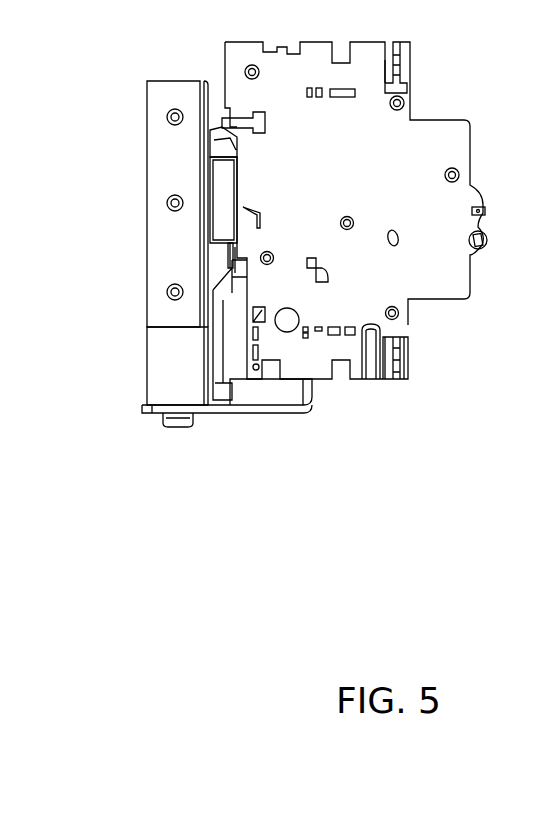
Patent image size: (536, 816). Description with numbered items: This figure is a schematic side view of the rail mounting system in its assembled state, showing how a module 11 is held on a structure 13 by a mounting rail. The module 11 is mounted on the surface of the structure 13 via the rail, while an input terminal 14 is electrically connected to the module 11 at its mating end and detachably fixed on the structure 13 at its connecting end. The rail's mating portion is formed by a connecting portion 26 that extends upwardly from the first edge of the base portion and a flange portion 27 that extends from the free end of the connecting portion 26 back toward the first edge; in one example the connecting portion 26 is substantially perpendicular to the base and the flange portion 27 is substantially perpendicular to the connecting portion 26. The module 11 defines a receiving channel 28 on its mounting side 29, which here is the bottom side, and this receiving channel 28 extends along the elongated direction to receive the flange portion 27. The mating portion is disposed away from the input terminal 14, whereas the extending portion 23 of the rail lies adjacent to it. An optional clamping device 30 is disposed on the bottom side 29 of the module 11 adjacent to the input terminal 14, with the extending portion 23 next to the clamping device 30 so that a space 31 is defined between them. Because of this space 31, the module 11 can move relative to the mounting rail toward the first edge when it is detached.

The module 11 is at (403, 153).
The structure 13 is at (160, 157).
The input terminal 14 is at (310, 396).
The extending portion 23 is at (226, 241).
The connecting portion 26 is at (214, 137).
The flange portion 27 is at (236, 137).
The receiving channel 28 is at (204, 150).
The mounting side 29 is at (237, 200).
The clamping device 30 is at (232, 360).
The space 31 is at (233, 254).